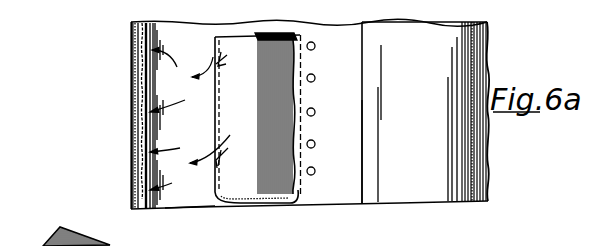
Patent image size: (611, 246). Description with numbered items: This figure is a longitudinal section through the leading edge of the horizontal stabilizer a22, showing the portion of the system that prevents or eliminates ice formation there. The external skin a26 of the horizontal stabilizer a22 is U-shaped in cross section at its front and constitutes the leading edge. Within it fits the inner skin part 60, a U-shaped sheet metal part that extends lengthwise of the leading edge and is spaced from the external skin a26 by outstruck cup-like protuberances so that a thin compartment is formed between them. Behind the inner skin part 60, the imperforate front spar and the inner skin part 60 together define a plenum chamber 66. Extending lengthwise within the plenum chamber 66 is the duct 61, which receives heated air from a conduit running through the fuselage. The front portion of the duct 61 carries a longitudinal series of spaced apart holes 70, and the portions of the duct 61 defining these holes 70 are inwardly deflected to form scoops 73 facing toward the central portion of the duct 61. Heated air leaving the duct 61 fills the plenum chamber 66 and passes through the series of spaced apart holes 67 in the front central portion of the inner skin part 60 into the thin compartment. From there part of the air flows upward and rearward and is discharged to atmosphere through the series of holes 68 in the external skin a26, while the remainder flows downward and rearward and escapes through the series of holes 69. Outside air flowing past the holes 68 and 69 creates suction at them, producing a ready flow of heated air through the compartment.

The holes 69 is at (310, 105).
The holes 68 is at (315, 167).
The duct 61 is at (253, 182).
The holes 70 is at (214, 56).
The scoops 73 is at (220, 62).
The holes 67 is at (143, 150).
The inner skin part 60 is at (135, 167).
The plenum chamber 66 is at (192, 195).
The horizontal stabilizer a22 is at (427, 72).
The external skin a26 is at (347, 131).